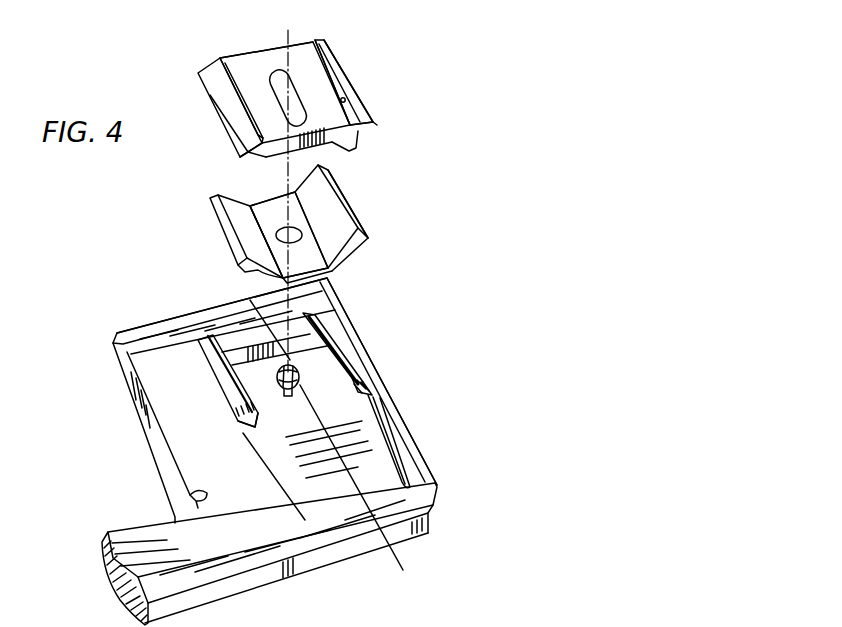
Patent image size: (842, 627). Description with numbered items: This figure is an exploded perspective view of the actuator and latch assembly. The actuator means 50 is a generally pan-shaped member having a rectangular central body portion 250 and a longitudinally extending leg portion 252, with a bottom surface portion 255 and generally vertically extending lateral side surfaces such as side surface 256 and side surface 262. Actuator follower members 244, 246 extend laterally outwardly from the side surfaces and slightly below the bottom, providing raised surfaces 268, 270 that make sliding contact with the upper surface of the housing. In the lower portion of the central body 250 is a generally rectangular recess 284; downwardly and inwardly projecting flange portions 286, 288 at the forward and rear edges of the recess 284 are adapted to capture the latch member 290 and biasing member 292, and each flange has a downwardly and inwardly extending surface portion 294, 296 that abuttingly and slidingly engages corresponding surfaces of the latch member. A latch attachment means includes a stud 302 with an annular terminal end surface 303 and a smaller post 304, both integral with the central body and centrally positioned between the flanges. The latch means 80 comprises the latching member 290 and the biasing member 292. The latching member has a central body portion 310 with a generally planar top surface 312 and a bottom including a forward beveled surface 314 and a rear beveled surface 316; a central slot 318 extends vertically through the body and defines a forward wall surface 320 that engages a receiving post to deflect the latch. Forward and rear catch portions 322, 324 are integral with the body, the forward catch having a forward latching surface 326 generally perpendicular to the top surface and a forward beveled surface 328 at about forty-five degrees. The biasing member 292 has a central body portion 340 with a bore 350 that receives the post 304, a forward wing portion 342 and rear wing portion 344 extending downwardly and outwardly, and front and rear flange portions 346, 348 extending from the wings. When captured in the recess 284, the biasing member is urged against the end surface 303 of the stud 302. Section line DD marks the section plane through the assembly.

The actuator means 50 is at (420, 455).
The latch means 80 is at (396, 234).
The actuator follower member 244 is at (417, 512).
The actuator follower member 246 is at (160, 322).
The rectangular central body portion 250 is at (183, 393).
The longitudinally extending leg portion 252 is at (137, 535).
The bottom surface portion 255 is at (200, 455).
The lateral side surface 256 is at (125, 388).
The lateral side surface 262 is at (347, 555).
The raised surface 268 is at (410, 502).
The raised surface 270 is at (323, 298).
The recess 284 is at (352, 423).
The flange portion 286 is at (357, 376).
The flange portion 288 is at (230, 395).
The latch member 290 is at (375, 118).
The biasing member 292 is at (347, 193).
The downwardly and inwardly extending surface portion 294 is at (368, 398).
The downwardly and inwardly extending surface portion 296 is at (257, 428).
The stud 302 is at (305, 392).
The annular terminal end surface 303 is at (280, 390).
The post 304 is at (343, 350).
The central body portion 310 is at (337, 146).
The planar top surface 312 is at (297, 68).
The forward beveled surface 314 is at (323, 55).
The rear beveled surface 316 is at (248, 62).
The central slot 318 is at (273, 67).
The forward wall surface 320 is at (343, 78).
The forward catch portion 322 is at (380, 132).
The rear catch portion 324 is at (245, 155).
The forward latching surface 326 is at (348, 102).
The forward beveled surface 328 is at (300, 90).
The central body portion 340 is at (328, 265).
The forward wing portion 342 is at (343, 250).
The rear wing portion 344 is at (258, 265).
The front flange portion 346 is at (360, 213).
The rear flange portion 348 is at (217, 211).
The bore 350 is at (285, 230).
The section line D-D DD is at (403, 570).